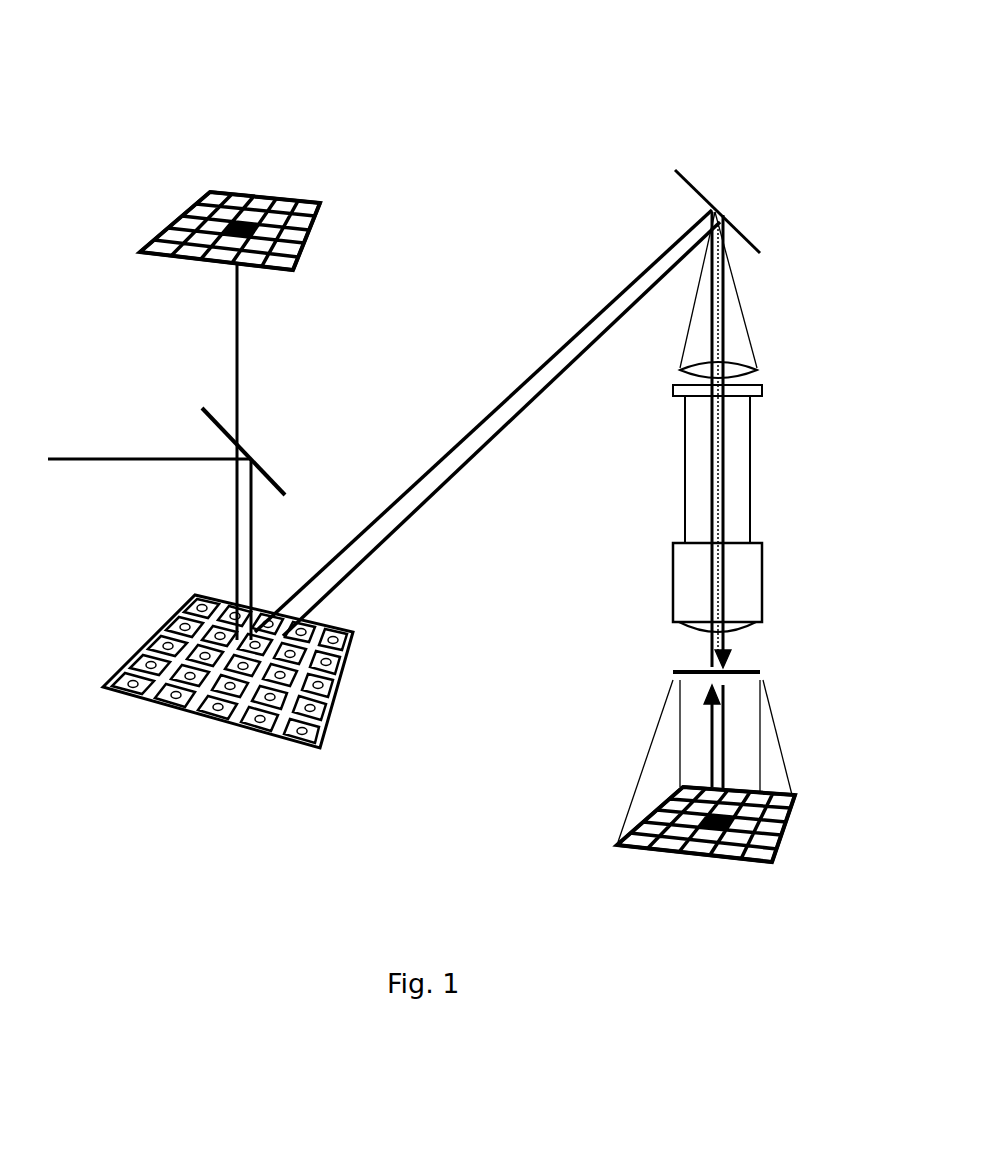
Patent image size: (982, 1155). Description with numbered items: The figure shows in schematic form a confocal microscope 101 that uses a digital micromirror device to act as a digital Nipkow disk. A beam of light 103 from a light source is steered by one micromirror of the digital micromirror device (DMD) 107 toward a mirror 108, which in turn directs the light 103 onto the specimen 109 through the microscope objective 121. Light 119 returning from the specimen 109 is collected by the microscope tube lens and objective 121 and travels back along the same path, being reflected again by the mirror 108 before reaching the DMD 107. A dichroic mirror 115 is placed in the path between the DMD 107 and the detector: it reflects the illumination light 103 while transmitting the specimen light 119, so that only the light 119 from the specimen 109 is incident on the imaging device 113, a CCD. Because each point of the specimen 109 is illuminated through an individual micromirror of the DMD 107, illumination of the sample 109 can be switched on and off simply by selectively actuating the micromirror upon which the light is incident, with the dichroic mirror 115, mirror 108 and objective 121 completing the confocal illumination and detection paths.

The confocal microscope 101 is at (556, 126).
The beam of light 103 is at (130, 462).
The digital micromirror device (DMD) 107 is at (348, 652).
The mirror 108 is at (703, 192).
The specimen 109 is at (772, 827).
The imaging device (CCD) 113 is at (313, 222).
The dichroic mirror 115 is at (264, 466).
The light from the specimen 119 is at (240, 338).
The microscope objective 121 is at (753, 573).